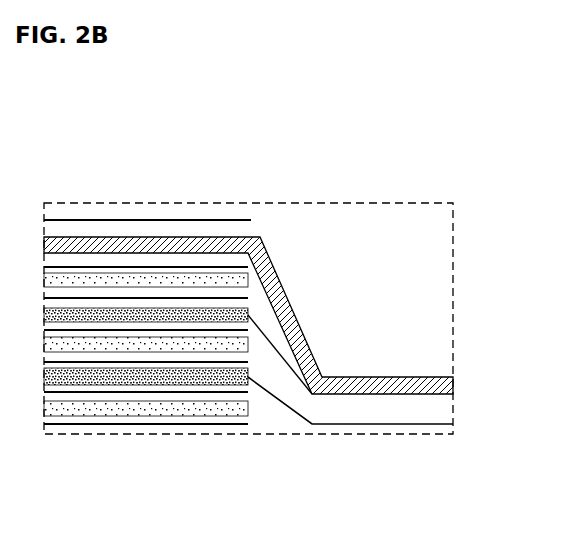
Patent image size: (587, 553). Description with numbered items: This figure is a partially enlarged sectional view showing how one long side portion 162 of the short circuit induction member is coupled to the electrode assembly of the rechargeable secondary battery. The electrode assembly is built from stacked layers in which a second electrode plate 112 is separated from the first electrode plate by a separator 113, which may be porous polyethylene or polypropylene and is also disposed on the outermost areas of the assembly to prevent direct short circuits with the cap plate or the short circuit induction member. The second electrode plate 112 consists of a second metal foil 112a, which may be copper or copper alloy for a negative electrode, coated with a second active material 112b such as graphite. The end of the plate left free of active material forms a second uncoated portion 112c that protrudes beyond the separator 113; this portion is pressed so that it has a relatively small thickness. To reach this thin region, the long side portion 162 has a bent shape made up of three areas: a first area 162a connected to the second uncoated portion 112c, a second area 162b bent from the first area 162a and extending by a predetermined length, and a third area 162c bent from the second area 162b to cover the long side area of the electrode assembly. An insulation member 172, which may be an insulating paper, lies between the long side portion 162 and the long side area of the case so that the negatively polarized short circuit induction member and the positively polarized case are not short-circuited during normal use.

The second electrode plate 112 is at (248, 450).
The second metal foil 112a is at (202, 373).
The second active material 112b is at (232, 398).
The second uncoated portion 112c is at (188, 486).
The separator 113 is at (130, 270).
The long side portion 162 is at (248, 250).
The first area 162a is at (367, 378).
The second area 162b is at (283, 278).
The third area 162c is at (205, 233).
The insulation member 172 is at (88, 220).